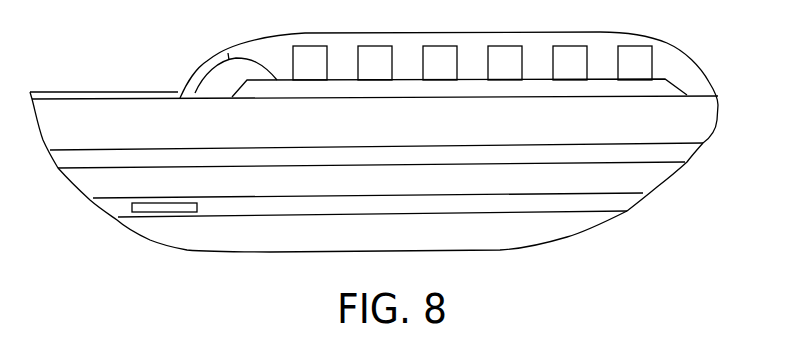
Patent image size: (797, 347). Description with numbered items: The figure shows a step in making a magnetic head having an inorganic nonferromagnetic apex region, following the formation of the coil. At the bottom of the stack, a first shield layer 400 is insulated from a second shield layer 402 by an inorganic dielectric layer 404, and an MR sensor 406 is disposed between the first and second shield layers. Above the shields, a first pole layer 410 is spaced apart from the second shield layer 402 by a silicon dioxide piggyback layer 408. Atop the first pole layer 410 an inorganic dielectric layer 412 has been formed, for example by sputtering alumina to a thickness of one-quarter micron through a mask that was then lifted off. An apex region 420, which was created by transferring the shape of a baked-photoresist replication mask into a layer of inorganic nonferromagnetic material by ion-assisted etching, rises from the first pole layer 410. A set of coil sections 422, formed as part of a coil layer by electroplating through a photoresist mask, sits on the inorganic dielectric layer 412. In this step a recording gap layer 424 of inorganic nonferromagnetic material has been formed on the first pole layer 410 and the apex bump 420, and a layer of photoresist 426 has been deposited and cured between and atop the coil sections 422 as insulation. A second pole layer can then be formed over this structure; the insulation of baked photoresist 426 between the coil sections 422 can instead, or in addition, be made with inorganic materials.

The first shield layer 400 is at (460, 242).
The second shield layer 402 is at (377, 191).
The inorganic dielectric layer 404 is at (280, 213).
The MR sensor 406 is at (163, 210).
The silicon dioxide piggyback layer 408 is at (132, 160).
The first pole layer 410 is at (492, 132).
The inorganic dielectric layer 412 is at (603, 85).
The apex region 420 is at (208, 61).
The coil sections 422 is at (373, 80).
The recording gap layer 424 is at (83, 92).
The photoresist 426 is at (686, 61).